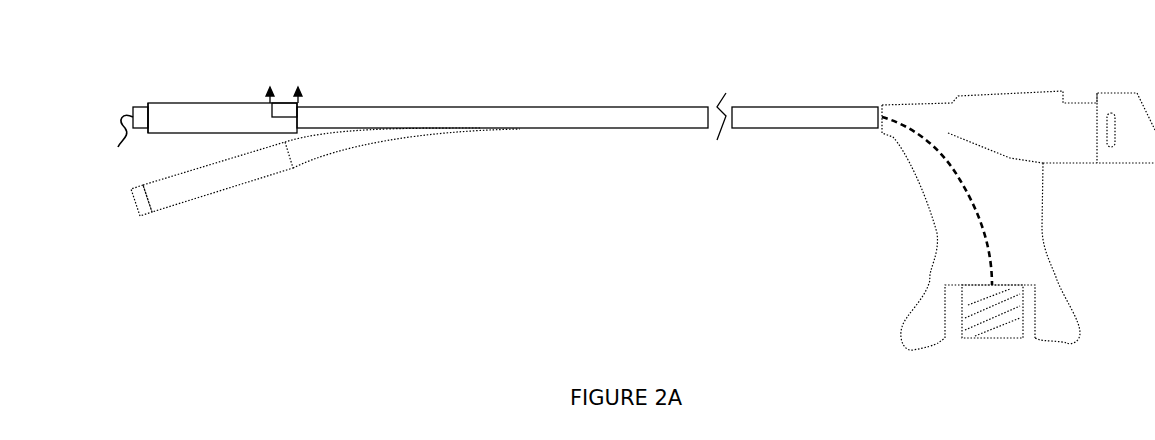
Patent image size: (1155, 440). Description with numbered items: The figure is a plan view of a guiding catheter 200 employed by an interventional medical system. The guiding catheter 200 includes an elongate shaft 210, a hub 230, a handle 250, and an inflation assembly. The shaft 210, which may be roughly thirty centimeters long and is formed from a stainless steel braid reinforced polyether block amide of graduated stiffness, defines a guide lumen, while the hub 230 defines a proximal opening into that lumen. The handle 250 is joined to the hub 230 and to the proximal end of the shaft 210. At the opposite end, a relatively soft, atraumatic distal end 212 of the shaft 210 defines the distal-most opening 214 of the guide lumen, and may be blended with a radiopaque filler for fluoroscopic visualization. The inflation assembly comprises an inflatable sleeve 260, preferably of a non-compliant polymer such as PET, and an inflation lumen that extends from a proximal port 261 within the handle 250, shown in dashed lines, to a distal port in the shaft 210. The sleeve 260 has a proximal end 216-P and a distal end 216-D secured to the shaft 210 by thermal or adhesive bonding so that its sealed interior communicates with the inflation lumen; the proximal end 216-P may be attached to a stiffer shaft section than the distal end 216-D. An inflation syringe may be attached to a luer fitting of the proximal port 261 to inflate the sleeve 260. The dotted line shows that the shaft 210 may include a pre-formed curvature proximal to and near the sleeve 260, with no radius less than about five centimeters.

The guiding catheter 200 is at (489, 283).
The shaft 210 is at (750, 118).
The distal end of shaft 212 is at (135, 115).
The distal-most opening 214 is at (125, 144).
The distal end of sleeve 216-D is at (155, 117).
The proximal end of sleeve 216-P is at (292, 122).
The hub 230 is at (1035, 113).
The handle 250 is at (951, 251).
The inflatable sleeve 260 is at (212, 112).
The proximal port 261 is at (993, 340).